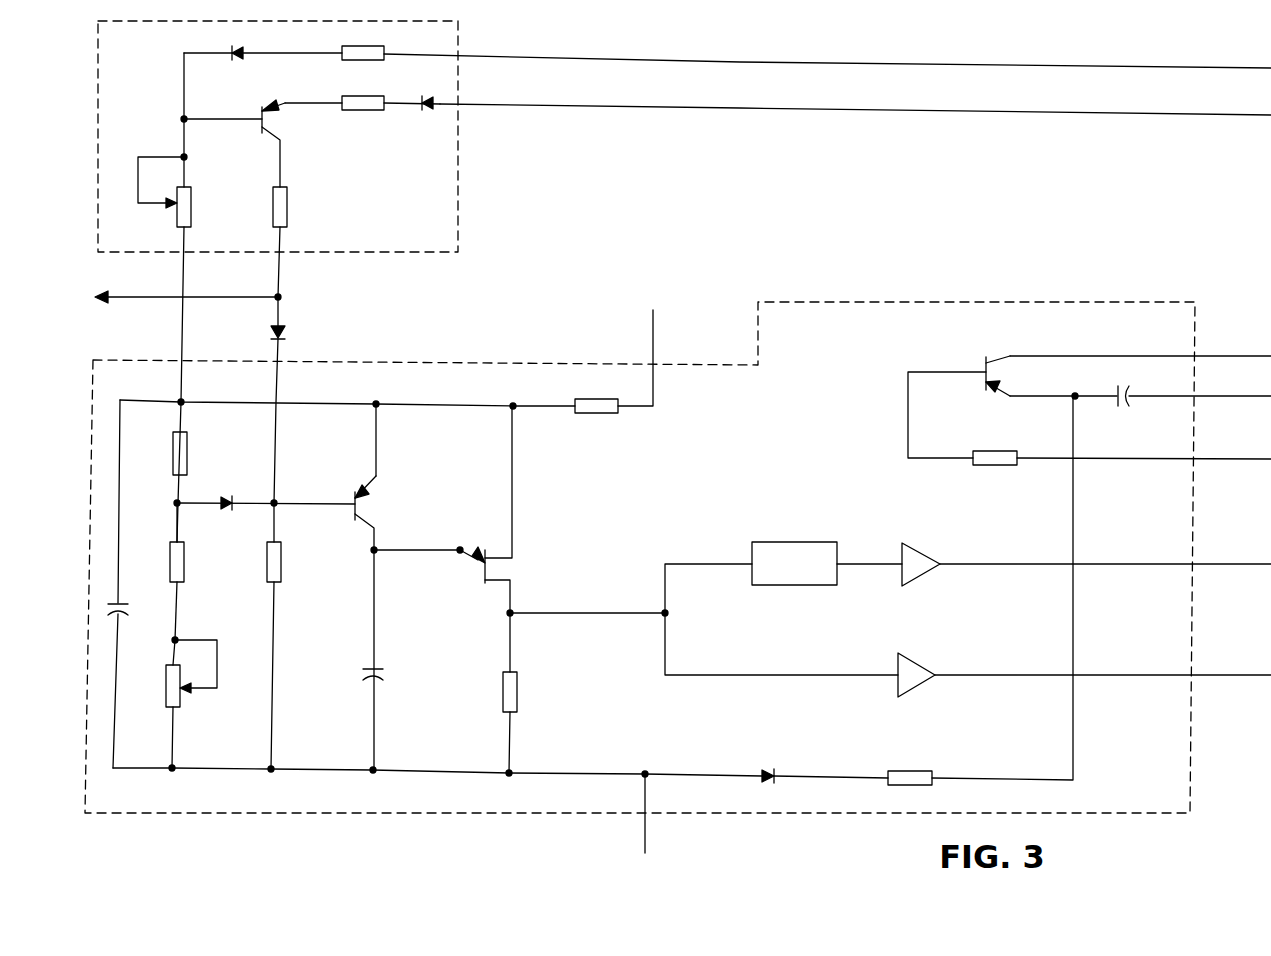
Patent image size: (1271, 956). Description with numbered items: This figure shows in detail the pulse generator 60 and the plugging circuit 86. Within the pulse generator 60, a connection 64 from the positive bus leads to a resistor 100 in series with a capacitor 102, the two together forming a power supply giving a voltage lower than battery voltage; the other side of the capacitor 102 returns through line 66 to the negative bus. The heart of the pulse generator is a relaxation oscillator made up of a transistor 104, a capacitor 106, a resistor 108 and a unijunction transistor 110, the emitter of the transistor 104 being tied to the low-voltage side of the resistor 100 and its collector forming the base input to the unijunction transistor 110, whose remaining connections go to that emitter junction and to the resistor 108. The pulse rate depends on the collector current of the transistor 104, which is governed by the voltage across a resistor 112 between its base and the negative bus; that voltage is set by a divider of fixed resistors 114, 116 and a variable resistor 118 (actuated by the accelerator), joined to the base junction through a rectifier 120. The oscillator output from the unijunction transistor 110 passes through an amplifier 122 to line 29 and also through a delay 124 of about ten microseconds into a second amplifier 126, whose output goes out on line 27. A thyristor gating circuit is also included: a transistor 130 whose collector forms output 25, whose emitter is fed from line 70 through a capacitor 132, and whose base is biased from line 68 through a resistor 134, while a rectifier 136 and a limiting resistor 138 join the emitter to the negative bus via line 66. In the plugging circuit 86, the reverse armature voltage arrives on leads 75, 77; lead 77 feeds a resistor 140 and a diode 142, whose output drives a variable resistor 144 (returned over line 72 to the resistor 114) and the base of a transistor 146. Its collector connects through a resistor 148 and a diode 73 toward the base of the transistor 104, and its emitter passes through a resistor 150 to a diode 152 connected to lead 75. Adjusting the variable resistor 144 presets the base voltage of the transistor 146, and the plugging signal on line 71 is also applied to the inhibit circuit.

The plugging circuit 86 is at (478, 36).
The rectifier (diode) 142 is at (241, 47).
The resistor 140 is at (377, 52).
The resistor 150 is at (366, 97).
The rectifier or diode 152 is at (426, 112).
The transistor 146 is at (280, 122).
The variable resistor 144 is at (206, 206).
The resistor 148 is at (302, 206).
The lead 77 is at (634, 62).
The lead 75 is at (632, 111).
The line 71 is at (143, 297).
The line 72 is at (186, 340).
The diode 73 is at (288, 338).
The pulse generator 60 is at (872, 302).
The connection 64 is at (660, 338).
The resistor 100 is at (604, 414).
The fixed resistor 114 is at (197, 444).
The rectifier 120 is at (228, 496).
The transistor 104 is at (368, 504).
The fixed resistor 116 is at (196, 562).
The resistor 112 is at (294, 584).
The capacitor 102 is at (124, 610).
The unijunction transistor 110 is at (478, 596).
The capacitor 106 is at (394, 669).
The resistor 108 is at (531, 698).
The variable resistor 118 is at (164, 696).
The line 66 is at (646, 832).
The rectifier 136 is at (775, 768).
The limiting resistor 138 is at (916, 772).
The delay 124 is at (810, 543).
The second amplifier 126 is at (922, 554).
The amplifier 122 is at (922, 659).
The output line 27 is at (1244, 569).
The line 29 is at (1244, 673).
The transistor 130 is at (986, 354).
The resistor 134 is at (984, 451).
The capacitor 132 is at (1124, 410).
The line 68 is at (1239, 459).
The line 25 is at (1239, 357).
The line 70 is at (1239, 398).